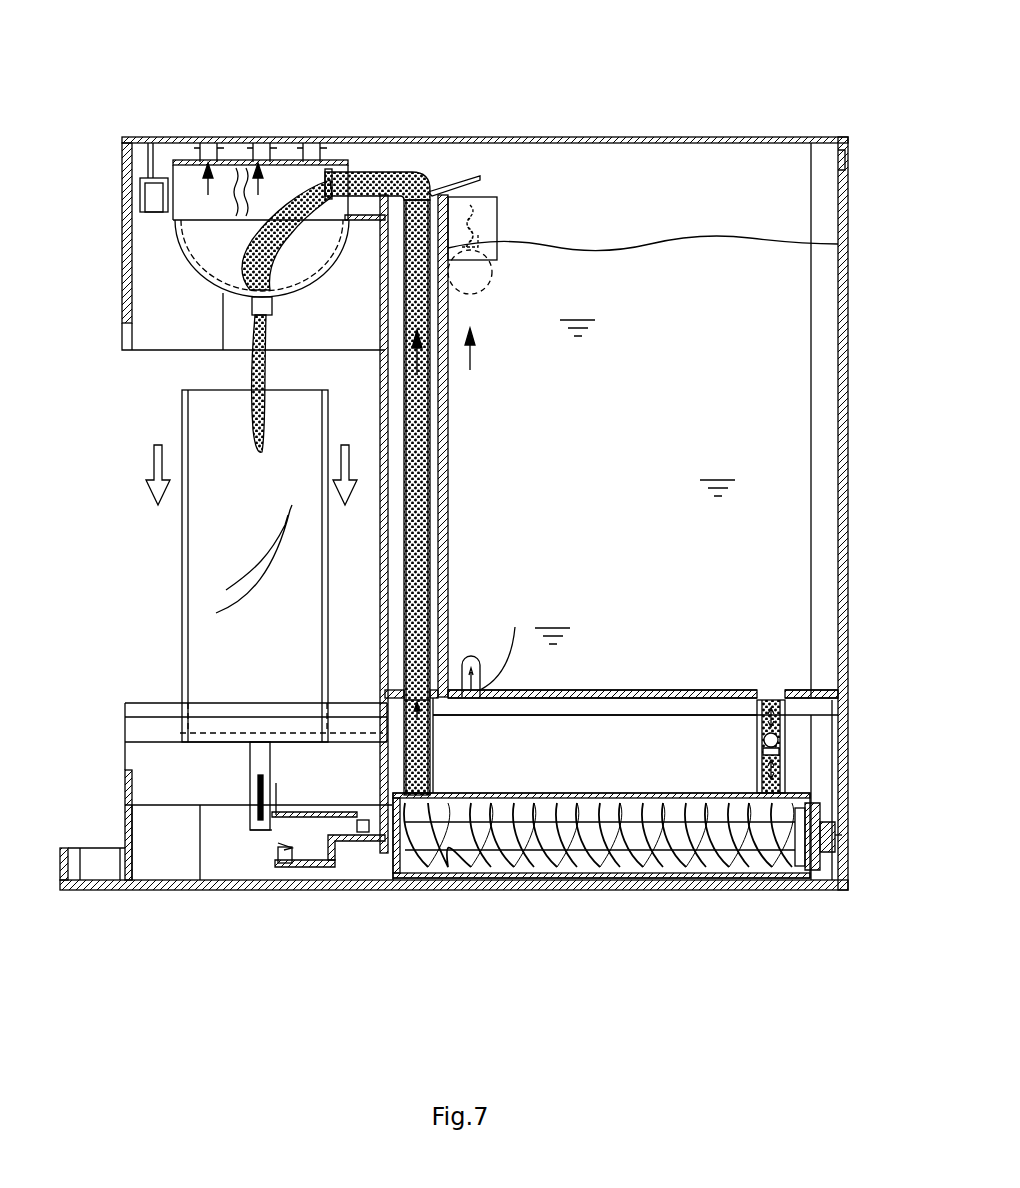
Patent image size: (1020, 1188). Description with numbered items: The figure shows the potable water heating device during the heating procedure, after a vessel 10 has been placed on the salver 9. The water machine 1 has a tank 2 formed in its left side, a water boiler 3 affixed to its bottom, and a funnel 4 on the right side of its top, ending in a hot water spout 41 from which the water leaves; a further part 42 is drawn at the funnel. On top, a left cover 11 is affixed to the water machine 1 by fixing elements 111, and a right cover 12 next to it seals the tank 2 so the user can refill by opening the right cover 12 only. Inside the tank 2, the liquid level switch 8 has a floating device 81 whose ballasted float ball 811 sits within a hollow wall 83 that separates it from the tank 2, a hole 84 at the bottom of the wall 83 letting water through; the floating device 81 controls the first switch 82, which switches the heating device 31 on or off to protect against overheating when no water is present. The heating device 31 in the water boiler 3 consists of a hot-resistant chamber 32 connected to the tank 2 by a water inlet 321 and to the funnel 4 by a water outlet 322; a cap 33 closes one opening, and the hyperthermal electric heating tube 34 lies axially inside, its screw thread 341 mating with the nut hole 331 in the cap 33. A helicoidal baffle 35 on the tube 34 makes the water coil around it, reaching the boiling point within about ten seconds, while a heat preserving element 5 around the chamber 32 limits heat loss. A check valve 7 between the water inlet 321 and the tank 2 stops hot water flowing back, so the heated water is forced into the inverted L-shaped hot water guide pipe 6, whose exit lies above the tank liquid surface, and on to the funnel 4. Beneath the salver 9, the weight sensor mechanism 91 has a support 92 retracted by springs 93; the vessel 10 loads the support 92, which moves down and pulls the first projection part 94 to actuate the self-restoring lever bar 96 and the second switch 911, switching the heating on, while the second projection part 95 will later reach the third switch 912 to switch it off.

The water machine 1 is at (848, 208).
The tank 2 is at (710, 137).
The water boiler 3 is at (832, 898).
The funnel 4 is at (208, 240).
The hot water spout 41 is at (272, 335).
The cover 42 is at (197, 137).
The heat preserving element 5 is at (395, 872).
The hot water guide pipe 6 is at (378, 173).
The check valve 7 is at (758, 740).
The liquid level switch 8 is at (462, 170).
The floating device 81 is at (483, 202).
The float ball 811 is at (480, 257).
The first switch 82 is at (440, 187).
The hollow wall 83 is at (455, 568).
The hole 84 is at (478, 688).
The salver 9 is at (148, 703).
The weight sensor mechanism 91 is at (280, 872).
The second switch 911 is at (368, 820).
The third switch 912 is at (278, 850).
The support 92 is at (255, 825).
The spring 93 is at (258, 790).
The first projection part 94 is at (278, 810).
The second projection part 95 is at (292, 848).
The self-restoring lever bar 96 is at (310, 816).
The vessel 10 is at (182, 545).
The left cover 11 is at (122, 165).
The fixing element 111 is at (148, 195).
The right cover 12 is at (515, 137).
The heating device 31 is at (646, 872).
The hot-resistant chamber 32 is at (655, 865).
The water inlet 321 is at (760, 785).
The water outlet 322 is at (420, 778).
The cap 33 is at (800, 876).
The nut hole 331 is at (812, 815).
The hyperthermal electric heating tube 34 is at (588, 852).
The screw thread 341 is at (859, 828).
The helicoidal baffle 35 is at (470, 857).